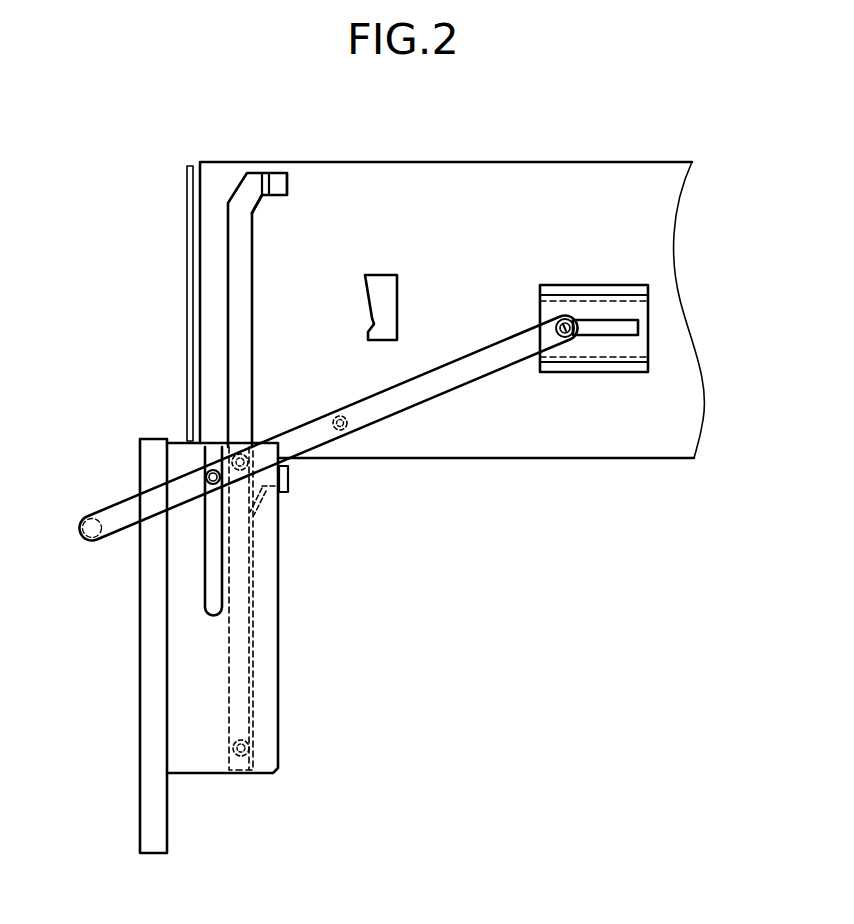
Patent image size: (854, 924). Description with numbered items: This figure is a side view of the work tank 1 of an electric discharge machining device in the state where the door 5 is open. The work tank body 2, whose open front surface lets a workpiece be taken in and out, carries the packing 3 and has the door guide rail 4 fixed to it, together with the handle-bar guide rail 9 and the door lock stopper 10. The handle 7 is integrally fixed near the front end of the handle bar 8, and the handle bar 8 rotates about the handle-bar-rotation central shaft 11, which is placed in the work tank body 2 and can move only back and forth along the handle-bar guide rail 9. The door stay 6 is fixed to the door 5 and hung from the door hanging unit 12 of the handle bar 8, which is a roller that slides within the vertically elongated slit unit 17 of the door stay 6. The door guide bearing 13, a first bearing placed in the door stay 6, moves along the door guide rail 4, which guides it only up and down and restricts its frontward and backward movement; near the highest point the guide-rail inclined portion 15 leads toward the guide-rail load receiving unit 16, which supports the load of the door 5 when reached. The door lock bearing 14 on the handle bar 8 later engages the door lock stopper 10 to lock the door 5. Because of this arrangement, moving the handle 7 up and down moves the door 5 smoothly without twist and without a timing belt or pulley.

The work tank 1 is at (437, 160).
The work tank body 2 is at (648, 202).
The packing 3 is at (185, 341).
The door guide rail 4 is at (238, 263).
The door 5 is at (140, 720).
The door stay 6 is at (280, 736).
The handle 7 is at (82, 530).
The handle bar 8 is at (120, 533).
The handle-bar guide rail 9 is at (650, 340).
The door lock stopper 10 is at (397, 300).
The handle-bar-rotation central shaft 11 is at (568, 342).
The door hanging unit 12 is at (205, 476).
The door guide bearing 13 is at (241, 775).
The door lock bearing 14 is at (340, 416).
The guide-rail inclined portion 15 is at (257, 200).
The guide-rail load receiving unit 16 is at (273, 190).
The slit unit 17 is at (210, 600).